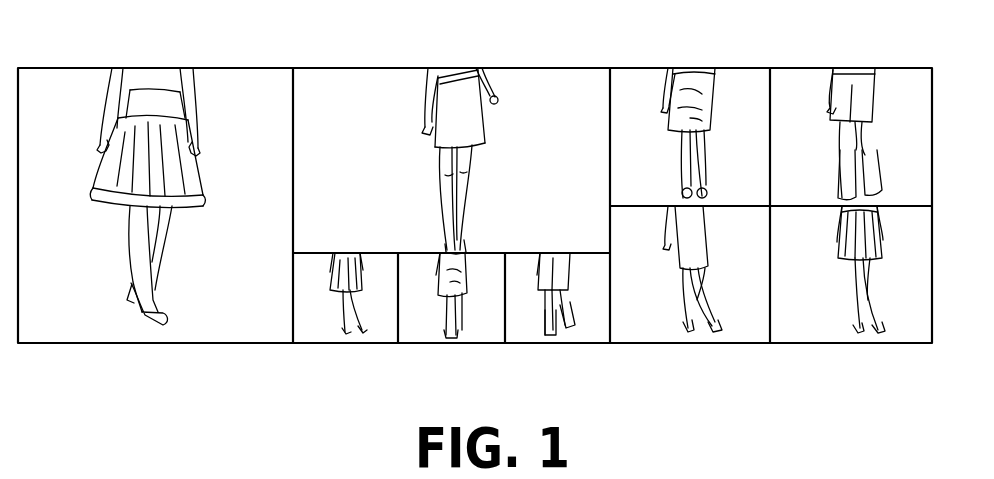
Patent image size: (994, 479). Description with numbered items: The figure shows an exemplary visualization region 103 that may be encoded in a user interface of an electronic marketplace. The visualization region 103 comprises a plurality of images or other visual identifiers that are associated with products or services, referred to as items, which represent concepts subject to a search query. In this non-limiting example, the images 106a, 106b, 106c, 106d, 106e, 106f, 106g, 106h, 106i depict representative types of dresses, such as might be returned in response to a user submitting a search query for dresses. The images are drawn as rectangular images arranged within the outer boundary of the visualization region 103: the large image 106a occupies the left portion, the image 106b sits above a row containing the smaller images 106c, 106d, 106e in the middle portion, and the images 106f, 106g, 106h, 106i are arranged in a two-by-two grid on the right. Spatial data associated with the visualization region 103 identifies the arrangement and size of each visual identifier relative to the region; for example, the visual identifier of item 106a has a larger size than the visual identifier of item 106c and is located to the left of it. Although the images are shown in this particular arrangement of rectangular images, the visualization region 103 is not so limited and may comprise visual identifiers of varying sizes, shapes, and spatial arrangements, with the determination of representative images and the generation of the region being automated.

The visualization region 103 is at (45, 67).
The image 106a is at (273, 332).
The image 106b is at (591, 243).
The image 106c is at (300, 343).
The image 106d is at (405, 343).
The image 106e is at (517, 343).
The image 106f is at (667, 200).
The image 106g is at (673, 335).
The image 106h is at (836, 200).
The image 106i is at (829, 335).